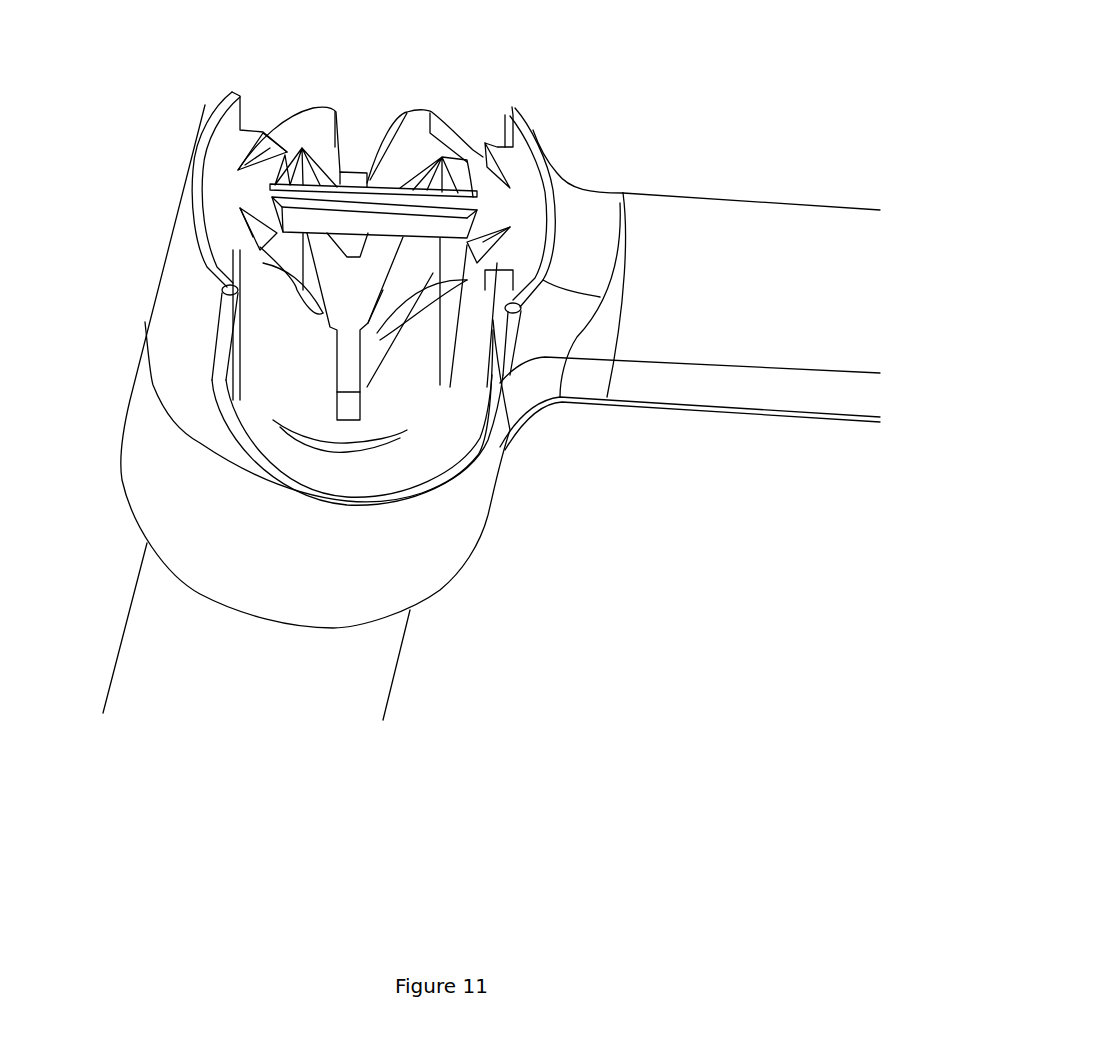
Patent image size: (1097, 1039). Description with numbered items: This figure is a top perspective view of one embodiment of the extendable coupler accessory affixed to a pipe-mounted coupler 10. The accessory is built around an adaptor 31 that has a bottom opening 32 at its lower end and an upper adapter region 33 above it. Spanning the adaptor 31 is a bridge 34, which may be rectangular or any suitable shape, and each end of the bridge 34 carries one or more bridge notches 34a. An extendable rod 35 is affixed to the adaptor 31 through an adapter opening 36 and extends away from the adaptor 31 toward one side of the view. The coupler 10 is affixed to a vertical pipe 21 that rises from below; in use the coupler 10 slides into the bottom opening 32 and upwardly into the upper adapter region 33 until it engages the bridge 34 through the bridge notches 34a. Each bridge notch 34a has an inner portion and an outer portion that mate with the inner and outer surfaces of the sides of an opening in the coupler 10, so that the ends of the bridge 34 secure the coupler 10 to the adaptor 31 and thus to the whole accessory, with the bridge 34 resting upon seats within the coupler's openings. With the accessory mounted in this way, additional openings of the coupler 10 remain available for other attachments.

The coupler 10 is at (407, 113).
The vertical pipe 21 is at (190, 637).
The adaptor 31 is at (147, 392).
The bottom opening 32 is at (137, 523).
The upper adapter region 33 is at (193, 265).
The bridge 34 is at (340, 186).
The bridge notches 34a is at (263, 147).
The extendable rod 35 is at (728, 245).
The adapter opening 36 is at (625, 193).